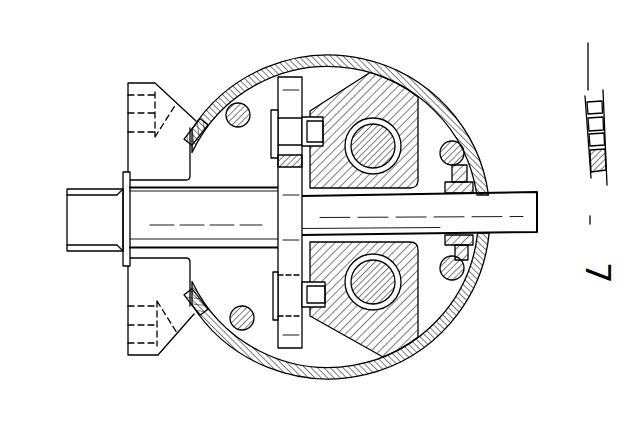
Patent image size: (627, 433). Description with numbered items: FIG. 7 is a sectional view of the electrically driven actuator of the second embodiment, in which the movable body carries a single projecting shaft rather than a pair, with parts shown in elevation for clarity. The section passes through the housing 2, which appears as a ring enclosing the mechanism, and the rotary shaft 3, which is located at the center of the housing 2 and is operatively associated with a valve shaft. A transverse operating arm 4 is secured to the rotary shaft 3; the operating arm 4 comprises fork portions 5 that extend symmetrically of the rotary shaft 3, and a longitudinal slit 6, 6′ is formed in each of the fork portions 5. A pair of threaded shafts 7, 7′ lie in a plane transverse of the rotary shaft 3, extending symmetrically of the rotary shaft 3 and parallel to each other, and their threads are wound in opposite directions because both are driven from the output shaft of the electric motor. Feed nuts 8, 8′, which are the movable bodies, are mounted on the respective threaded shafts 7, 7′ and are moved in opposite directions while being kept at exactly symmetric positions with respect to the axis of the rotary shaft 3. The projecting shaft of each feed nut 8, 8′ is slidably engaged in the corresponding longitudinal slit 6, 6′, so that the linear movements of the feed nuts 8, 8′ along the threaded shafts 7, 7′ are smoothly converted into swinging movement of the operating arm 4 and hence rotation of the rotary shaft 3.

The housing 2 is at (468, 140).
The rotary shaft 3 is at (512, 232).
The operating arm 4 is at (287, 187).
The fork portion 5 is at (291, 77).
The longitudinal slit 6 is at (280, 136).
The longitudinal slit 6′ is at (277, 290).
The threaded shaft 7 is at (383, 143).
The threaded shaft 7′ is at (388, 282).
The feed nut 8 is at (402, 98).
The feed nut 8′ is at (407, 333).